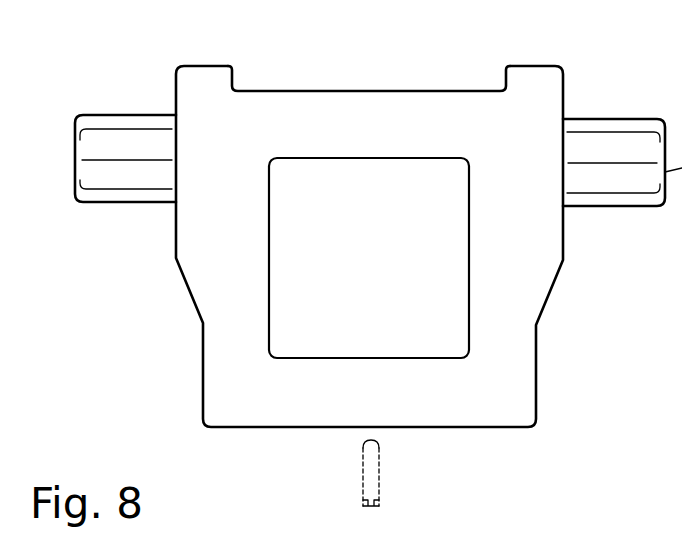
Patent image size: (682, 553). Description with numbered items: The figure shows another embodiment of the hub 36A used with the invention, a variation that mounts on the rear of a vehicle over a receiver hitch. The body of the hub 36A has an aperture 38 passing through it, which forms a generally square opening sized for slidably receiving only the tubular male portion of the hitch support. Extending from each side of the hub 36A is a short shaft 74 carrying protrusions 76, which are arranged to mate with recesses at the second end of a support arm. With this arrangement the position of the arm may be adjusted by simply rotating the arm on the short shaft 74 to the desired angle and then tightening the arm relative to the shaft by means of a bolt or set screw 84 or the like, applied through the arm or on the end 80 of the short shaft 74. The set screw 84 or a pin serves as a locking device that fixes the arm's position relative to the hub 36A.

The hub 36A is at (203, 397).
The aperture 38 is at (270, 251).
The short shaft 74 is at (121, 115).
The protrusions 76 is at (110, 190).
The end of the short shaft 80 is at (75, 160).
The set screw 84 is at (380, 485).